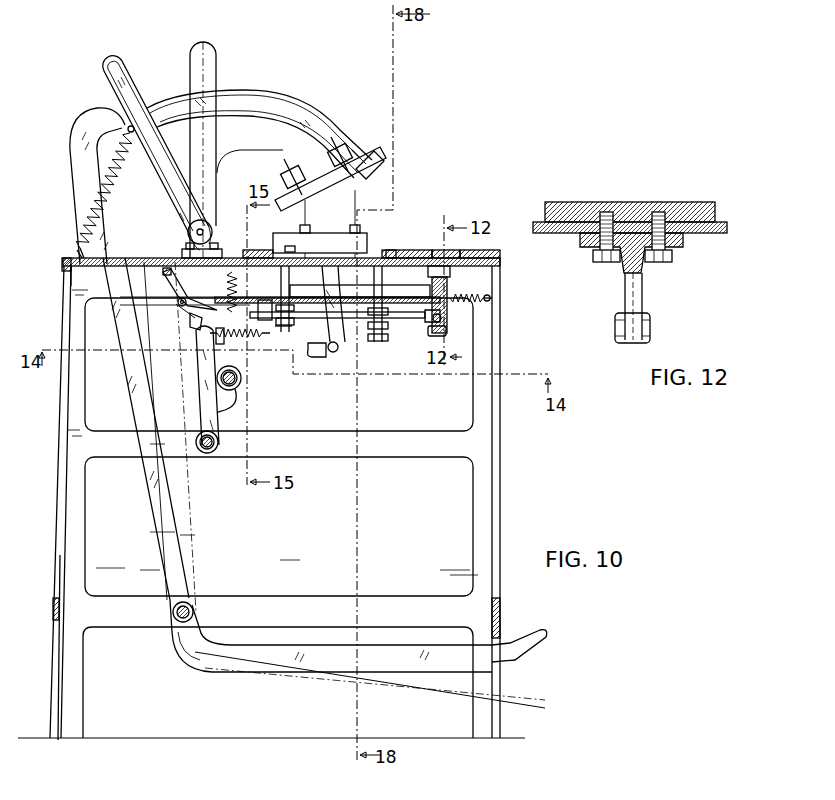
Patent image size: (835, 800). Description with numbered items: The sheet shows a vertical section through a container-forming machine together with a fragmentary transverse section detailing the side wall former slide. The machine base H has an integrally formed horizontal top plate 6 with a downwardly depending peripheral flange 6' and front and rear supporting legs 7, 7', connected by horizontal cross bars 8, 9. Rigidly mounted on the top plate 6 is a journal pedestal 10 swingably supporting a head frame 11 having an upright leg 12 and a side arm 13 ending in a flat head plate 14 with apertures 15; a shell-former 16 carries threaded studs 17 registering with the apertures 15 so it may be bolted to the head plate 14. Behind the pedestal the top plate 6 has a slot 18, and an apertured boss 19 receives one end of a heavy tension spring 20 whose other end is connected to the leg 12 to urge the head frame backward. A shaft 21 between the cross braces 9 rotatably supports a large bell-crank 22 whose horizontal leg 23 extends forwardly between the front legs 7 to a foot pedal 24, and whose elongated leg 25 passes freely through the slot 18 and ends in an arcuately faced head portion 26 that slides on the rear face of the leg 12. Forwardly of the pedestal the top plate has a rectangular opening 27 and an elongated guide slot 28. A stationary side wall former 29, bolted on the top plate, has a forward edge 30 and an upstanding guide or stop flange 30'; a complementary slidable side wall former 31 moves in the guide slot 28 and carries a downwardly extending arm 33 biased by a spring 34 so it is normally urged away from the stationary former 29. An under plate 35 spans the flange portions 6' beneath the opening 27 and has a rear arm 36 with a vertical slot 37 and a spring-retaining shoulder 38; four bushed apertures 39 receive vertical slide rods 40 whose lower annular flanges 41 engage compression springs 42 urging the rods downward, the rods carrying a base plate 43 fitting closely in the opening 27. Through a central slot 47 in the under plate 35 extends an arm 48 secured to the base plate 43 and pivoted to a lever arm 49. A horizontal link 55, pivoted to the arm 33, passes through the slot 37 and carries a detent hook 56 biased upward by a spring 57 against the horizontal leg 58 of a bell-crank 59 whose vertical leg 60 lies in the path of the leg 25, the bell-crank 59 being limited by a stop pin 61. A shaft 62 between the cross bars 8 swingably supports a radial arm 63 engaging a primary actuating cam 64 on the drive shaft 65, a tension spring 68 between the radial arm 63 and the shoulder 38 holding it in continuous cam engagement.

In FIG. 10, the top plate 6 is at (279, 270).
In FIG. 12, the top plate 6 is at (644, 215).
In FIG. 10, the peripheral flange 6' is at (53, 296).
In FIG. 10, the front supporting legs 7 is at (512, 498).
In FIG. 10, the rear supporting legs 7' is at (39, 643).
In FIG. 10, the machine base H is at (66, 503).
In FIG. 10, the cross bars 8 is at (380, 458).
In FIG. 10, the cross bars 9 is at (292, 627).
In FIG. 10, the journal pedestal 10 is at (214, 250).
In FIG. 10, the head frame 11 is at (273, 98).
In FIG. 10, the upright leg 12 is at (121, 70).
In FIG. 10, the side arm 13 is at (312, 124).
In FIG. 10, the head plate 14 is at (348, 142).
In FIG. 10, the apertures 15 is at (302, 166).
In FIG. 10, the shell-former 16 is at (378, 163).
In FIG. 10, the threaded studs 17 is at (357, 154).
In FIG. 10, the slot 18 is at (140, 262).
In FIG. 10, the boss 19 is at (70, 255).
In FIG. 10, the tension spring 20 is at (98, 192).
In FIG. 10, the shaft 21 is at (178, 620).
In FIG. 10, the bell-crank 22 is at (178, 546).
In FIG. 10, the horizontal leg 23 is at (266, 668).
In FIG. 10, the foot pedal 24 is at (542, 644).
In FIG. 10, the elongated leg 25 is at (137, 405).
In FIG. 10, the head portion 26 is at (100, 122).
In FIG. 10, the rectangular opening 27 is at (408, 250).
In FIG. 10, the guide slot 28 is at (438, 250).
In FIG. 12, the guide slot 28 is at (597, 247).
In FIG. 10, the side wall former 29 is at (255, 250).
In FIG. 10, the forward edge 30 is at (336, 224).
In FIG. 10, the guide or stop flange 30' is at (291, 236).
In FIG. 10, the slidable side wall former 31 is at (470, 258).
In FIG. 12, the slidable side wall former 31 is at (640, 202).
In FIG. 10, the arm 33 is at (448, 292).
In FIG. 12, the arm 33 is at (644, 297).
In FIG. 10, the spring 34 is at (462, 300).
In FIG. 10, the under plate 35 is at (398, 320).
In FIG. 10, the arm 36 is at (285, 326).
In FIG. 10, the vertical slot 37 is at (250, 298).
In FIG. 10, the spring-retaining shoulder 38 is at (264, 322).
In FIG. 10, the bushed apertures 39 is at (372, 322).
In FIG. 10, the slide rods 40 is at (385, 297).
In FIG. 10, the annular flanges 41 is at (381, 340).
In FIG. 10, the compression springs 42 is at (390, 326).
In FIG. 10, the base plate 43 is at (392, 252).
In FIG. 10, the slot 47 is at (340, 312).
In FIG. 10, the arm 48 is at (291, 328).
In FIG. 10, the lever arm 49 is at (318, 354).
In FIG. 10, the horizontal link 55 is at (428, 338).
In FIG. 12, the horizontal link 55 is at (651, 330).
In FIG. 10, the detent hook 56 is at (215, 334).
In FIG. 10, the spring 57 is at (228, 292).
In FIG. 10, the horizontal leg 58 is at (188, 318).
In FIG. 10, the bell-crank 59 is at (178, 306).
In FIG. 10, the vertical leg 60 is at (166, 277).
In FIG. 10, the stop pin 61 is at (172, 296).
In FIG. 10, the shaft 62 is at (210, 454).
In FIG. 10, the radial arm 63 is at (197, 413).
In FIG. 10, the primary actuating cam 64 is at (228, 392).
In FIG. 10, the drive shaft 65 is at (243, 386).
In FIG. 10, the tension spring 68 is at (226, 342).